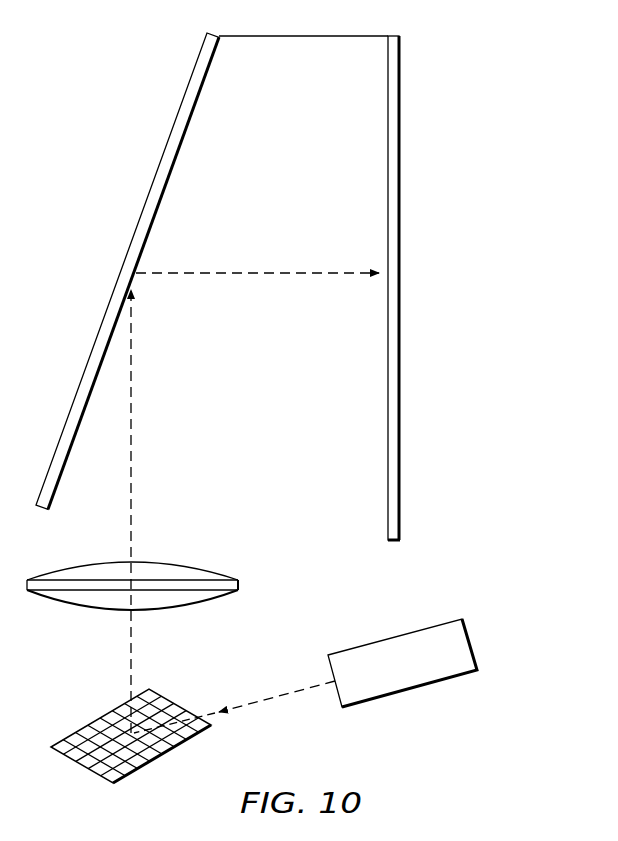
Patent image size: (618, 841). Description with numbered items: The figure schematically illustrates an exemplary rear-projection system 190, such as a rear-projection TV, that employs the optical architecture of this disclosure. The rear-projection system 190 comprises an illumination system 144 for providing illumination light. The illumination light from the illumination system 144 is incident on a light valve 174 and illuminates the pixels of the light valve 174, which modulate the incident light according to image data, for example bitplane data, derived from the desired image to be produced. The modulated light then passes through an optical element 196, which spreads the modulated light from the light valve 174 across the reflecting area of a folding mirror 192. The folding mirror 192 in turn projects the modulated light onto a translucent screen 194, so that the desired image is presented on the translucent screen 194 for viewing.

The rear-projection system 190 is at (508, 120).
The folding mirror 192 is at (139, 220).
The translucent screen 194 is at (399, 191).
The optical element 196 is at (83, 607).
The light valve 174 is at (80, 765).
The illumination system 144 is at (410, 690).